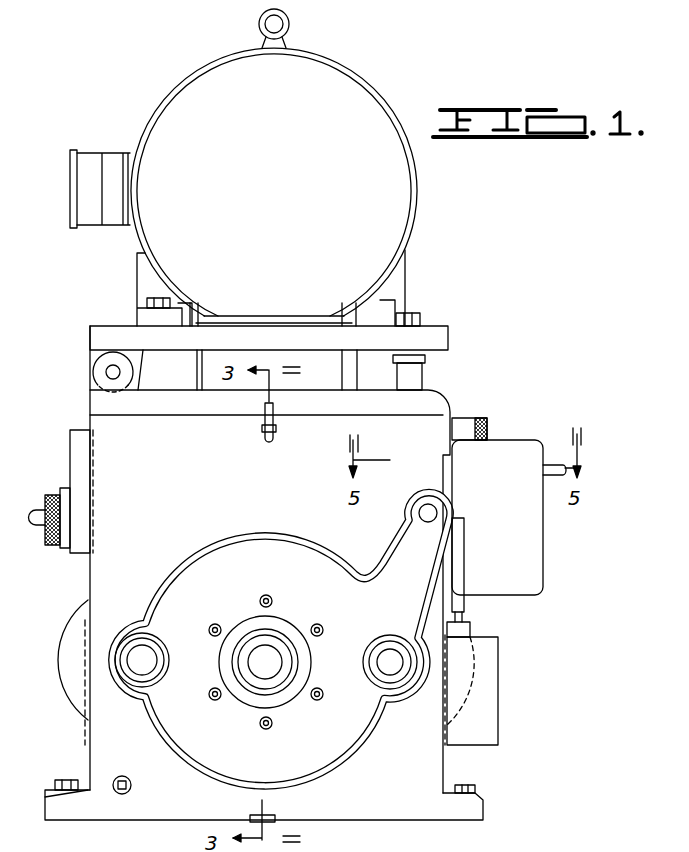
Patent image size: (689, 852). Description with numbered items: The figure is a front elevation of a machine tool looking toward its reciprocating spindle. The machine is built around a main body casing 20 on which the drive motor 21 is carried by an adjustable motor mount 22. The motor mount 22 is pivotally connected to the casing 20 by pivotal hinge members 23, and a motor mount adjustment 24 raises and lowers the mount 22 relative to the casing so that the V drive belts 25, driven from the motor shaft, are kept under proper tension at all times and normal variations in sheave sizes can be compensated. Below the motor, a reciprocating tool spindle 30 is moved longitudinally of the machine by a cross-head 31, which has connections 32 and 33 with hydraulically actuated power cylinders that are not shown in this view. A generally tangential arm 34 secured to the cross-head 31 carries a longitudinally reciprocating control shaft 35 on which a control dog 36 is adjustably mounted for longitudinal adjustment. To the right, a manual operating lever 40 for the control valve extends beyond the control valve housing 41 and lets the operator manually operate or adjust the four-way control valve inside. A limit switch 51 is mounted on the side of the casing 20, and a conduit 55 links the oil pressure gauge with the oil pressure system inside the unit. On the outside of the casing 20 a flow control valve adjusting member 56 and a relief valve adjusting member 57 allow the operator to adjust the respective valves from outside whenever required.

The main body casing 20 is at (163, 544).
The drive motor 21 is at (400, 206).
The adjustable motor mount 22 is at (340, 350).
The pivotal hinge members 23 is at (92, 376).
The motor mount adjustment 24 is at (422, 360).
The V drive belts 25 is at (187, 366).
The reciprocating tool spindle 30 is at (266, 662).
The cross-head 31 is at (318, 760).
The connection 32 is at (393, 676).
The connection 33 is at (142, 674).
The tangential arm 34 is at (386, 560).
The control shaft 35 is at (434, 508).
The control dog 36 is at (465, 608).
The manual operating lever 40 is at (545, 468).
The control valve housing 41 is at (528, 528).
The limit switch 51 is at (490, 706).
The conduit 55 is at (278, 428).
The flow control valve adjusting member 56 is at (46, 493).
The relief valve adjusting member 57 is at (132, 789).